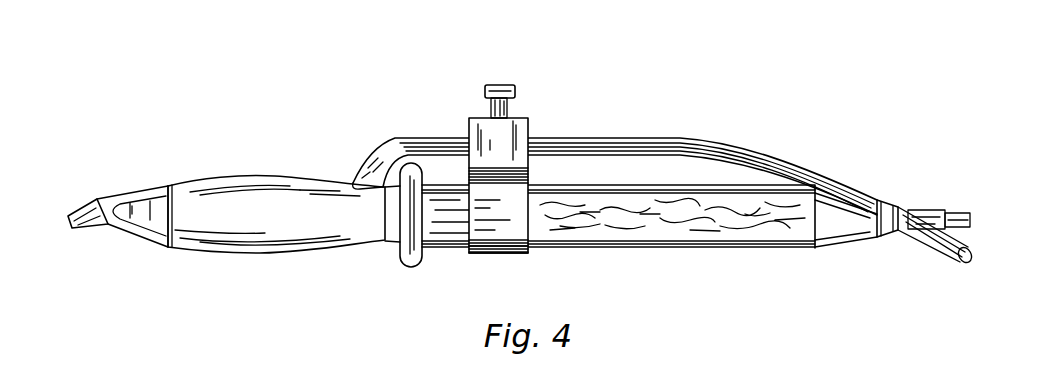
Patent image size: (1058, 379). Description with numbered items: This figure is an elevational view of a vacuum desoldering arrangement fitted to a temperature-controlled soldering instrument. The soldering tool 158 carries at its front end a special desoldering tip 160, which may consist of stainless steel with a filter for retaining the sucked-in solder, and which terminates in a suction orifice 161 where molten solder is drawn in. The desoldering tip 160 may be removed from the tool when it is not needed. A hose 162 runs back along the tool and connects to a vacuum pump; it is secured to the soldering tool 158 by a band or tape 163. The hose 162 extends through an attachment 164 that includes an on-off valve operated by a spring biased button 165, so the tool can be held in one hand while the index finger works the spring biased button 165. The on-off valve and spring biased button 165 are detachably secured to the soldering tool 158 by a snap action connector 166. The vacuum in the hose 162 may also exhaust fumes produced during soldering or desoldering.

The soldering tool 158 is at (683, 277).
The desoldering tip 160 is at (270, 177).
The suction orifice 161 is at (87, 228).
The hose 162 is at (735, 143).
The band or tape 163 is at (885, 199).
The attachment 164 is at (529, 128).
The spring biased button 165 is at (501, 84).
The snap action connector 166 is at (500, 257).